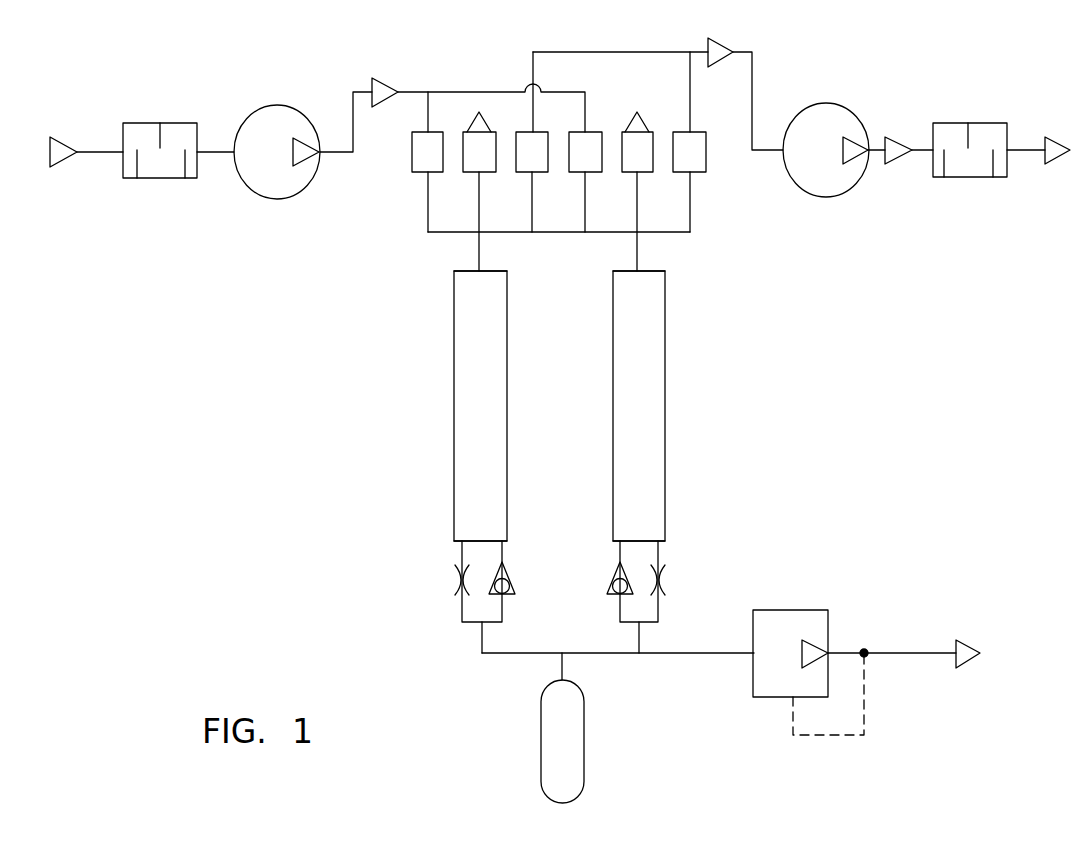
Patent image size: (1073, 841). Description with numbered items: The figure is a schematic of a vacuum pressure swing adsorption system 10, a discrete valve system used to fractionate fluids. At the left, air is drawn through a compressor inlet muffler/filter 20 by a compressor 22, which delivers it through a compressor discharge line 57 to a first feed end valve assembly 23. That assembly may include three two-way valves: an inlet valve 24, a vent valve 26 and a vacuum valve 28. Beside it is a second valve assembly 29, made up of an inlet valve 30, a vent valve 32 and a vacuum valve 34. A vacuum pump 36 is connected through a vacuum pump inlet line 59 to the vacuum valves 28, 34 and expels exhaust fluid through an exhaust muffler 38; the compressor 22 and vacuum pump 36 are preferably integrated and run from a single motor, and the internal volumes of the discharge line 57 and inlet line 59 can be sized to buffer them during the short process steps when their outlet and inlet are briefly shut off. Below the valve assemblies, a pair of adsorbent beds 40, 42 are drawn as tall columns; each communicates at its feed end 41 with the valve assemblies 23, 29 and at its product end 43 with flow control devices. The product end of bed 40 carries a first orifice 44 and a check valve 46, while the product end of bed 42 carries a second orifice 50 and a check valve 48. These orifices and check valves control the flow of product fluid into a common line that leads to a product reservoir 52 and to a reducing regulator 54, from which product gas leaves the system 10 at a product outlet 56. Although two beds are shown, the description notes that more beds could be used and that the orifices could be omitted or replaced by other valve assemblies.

The vacuum pressure swing adsorption system 10 is at (863, 86).
The compressor inlet muffler/filter 20 is at (185, 122).
The compressor 22 is at (278, 105).
The first feed end valve assembly 23 is at (470, 96).
The inlet valve 24 is at (422, 173).
The vent valve 26 is at (475, 173).
The vacuum valve 28 is at (528, 173).
The second valve assembly 29 is at (617, 82).
The inlet valve 30 is at (590, 173).
The vent valve 32 is at (642, 173).
The vacuum valve 34 is at (695, 173).
The vacuum pump 36 is at (826, 198).
The exhaust muffler 38 is at (950, 178).
The adsorbent bed 40 is at (455, 365).
The feed end 41 is at (456, 302).
The adsorbent bed 42 is at (665, 362).
The product end 43 is at (454, 528).
The first orifice 44 is at (455, 585).
The check valve 46 is at (509, 578).
The check valve 48 is at (611, 580).
The second orifice 50 is at (664, 585).
The product reservoir 52 is at (541, 768).
The reducing regulator 54 is at (828, 622).
The product outlet 56 is at (956, 640).
The compressor discharge line 57 is at (352, 107).
The vacuum pump inlet line 59 is at (753, 78).